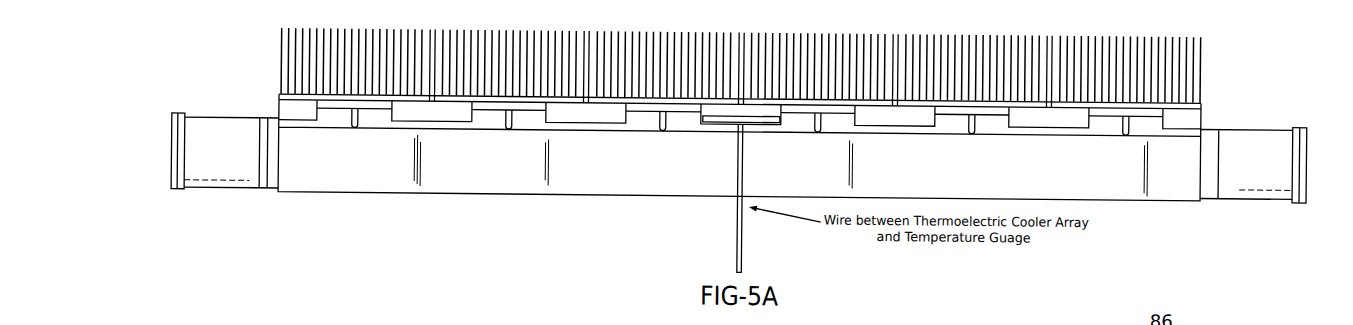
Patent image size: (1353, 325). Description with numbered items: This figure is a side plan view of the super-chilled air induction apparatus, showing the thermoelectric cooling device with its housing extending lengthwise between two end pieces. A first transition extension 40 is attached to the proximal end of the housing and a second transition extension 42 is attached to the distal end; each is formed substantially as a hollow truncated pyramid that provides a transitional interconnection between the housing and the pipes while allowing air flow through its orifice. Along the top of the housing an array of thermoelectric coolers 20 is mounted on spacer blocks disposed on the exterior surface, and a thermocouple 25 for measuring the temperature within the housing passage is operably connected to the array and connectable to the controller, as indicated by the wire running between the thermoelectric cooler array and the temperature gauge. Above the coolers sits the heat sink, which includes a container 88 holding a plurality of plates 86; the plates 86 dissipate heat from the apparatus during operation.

The thermoelectric cooler 20 is at (327, 105).
The thermocouple 25 is at (718, 116).
The first transition extension 40 is at (203, 169).
The second transition extension 42 is at (1238, 174).
The plurality of plates 86 is at (1205, 54).
The container 88 is at (278, 97).